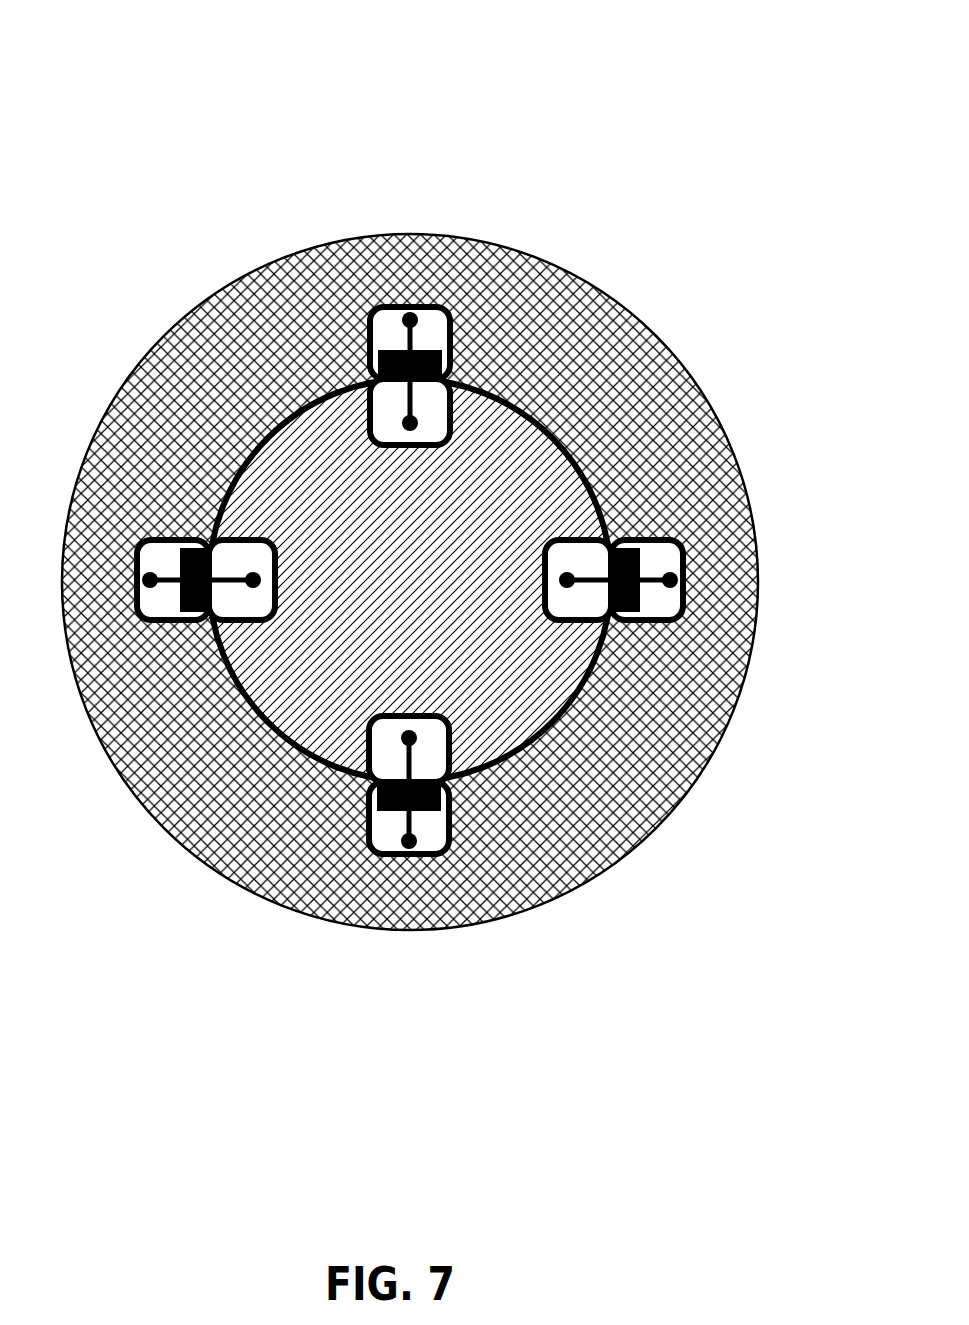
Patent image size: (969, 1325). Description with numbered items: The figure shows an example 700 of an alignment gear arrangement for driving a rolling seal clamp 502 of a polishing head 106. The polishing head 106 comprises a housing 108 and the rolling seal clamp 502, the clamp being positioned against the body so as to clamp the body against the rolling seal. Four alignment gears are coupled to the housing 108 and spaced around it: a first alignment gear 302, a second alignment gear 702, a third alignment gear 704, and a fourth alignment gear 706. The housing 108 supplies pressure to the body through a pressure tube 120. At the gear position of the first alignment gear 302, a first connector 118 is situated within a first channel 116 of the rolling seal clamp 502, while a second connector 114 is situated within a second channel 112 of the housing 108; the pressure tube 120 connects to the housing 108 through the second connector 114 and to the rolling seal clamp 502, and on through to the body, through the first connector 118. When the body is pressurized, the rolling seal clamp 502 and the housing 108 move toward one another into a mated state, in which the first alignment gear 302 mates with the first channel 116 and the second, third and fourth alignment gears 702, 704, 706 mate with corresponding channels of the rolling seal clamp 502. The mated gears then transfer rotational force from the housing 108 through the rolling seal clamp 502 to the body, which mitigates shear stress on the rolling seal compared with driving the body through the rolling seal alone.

The alignment gear arrangement example 700 is at (120, 48).
The polishing head 106 is at (592, 169).
The rolling seal clamp 502 is at (310, 240).
The housing 108 is at (410, 537).
The third alignment gear 704 is at (441, 343).
The second alignment gear 702 is at (637, 530).
The fourth alignment gear 706 is at (177, 532).
The second channel 112 is at (432, 712).
The second connector 114 is at (398, 712).
The pressure tube 120 is at (393, 770).
The first alignment gear 302 is at (361, 820).
The first connector 118 is at (401, 848).
The first channel 116 is at (433, 846).